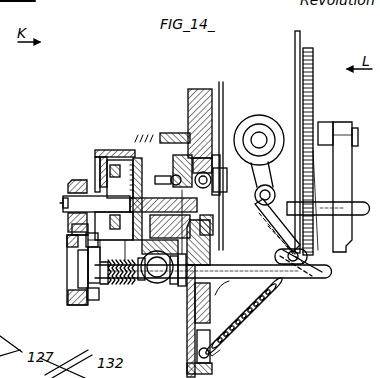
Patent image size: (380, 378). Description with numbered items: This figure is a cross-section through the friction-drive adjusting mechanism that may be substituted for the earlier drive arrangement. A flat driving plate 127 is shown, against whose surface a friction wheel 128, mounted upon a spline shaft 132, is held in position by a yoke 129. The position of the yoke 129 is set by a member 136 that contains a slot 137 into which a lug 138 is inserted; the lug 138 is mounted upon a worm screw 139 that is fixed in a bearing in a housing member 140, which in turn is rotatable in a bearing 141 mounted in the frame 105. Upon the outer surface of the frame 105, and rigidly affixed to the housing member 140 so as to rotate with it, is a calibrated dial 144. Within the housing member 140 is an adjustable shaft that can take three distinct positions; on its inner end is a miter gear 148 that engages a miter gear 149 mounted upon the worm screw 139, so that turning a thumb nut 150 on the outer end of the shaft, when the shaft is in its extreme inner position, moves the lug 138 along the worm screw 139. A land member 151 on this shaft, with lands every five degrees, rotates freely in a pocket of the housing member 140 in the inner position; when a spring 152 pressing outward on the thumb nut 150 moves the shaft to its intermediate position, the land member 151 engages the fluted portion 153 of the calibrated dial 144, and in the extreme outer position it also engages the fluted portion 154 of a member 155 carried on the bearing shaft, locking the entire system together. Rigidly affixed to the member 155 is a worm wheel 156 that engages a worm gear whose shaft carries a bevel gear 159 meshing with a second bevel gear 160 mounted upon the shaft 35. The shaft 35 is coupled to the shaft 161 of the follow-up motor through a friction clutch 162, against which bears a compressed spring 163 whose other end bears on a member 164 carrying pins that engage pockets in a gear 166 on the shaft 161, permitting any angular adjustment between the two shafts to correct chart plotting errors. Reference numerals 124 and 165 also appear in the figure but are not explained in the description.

The shaft 35 is at (280, 277).
The frame 105 is at (212, 371).
The rack 124 is at (311, 49).
The flat driving plate 127 is at (297, 31).
The friction wheel 128 is at (241, 121).
The yoke 129 is at (260, 132).
The spline shaft 132 is at (268, 125).
The member 136 is at (326, 268).
The slot 137 is at (287, 278).
The lug 138 is at (290, 273).
The worm screw 139 is at (276, 241).
The housing member 140 is at (246, 305).
The bearing 141 is at (174, 166).
The calibrated dial 144 is at (168, 133).
The miter gear 148 is at (198, 89).
The miter gear 149 is at (221, 82).
The thumb nut 150 is at (70, 191).
The land member 151 is at (248, 331).
The spring 152 is at (93, 185).
The fluted portion 153 is at (182, 290).
The fluted portion 154 is at (172, 288).
The member 155 is at (158, 128).
The worm wheel 156 is at (72, 232).
The bevel gear 159 is at (160, 284).
The second bevel gear 160 is at (145, 281).
The shaft 161 is at (64, 262).
The friction clutch 162 is at (132, 290).
The spring 163 is at (114, 288).
The member 164 is at (94, 300).
The plate 165 is at (80, 250).
The gear 166 is at (72, 300).